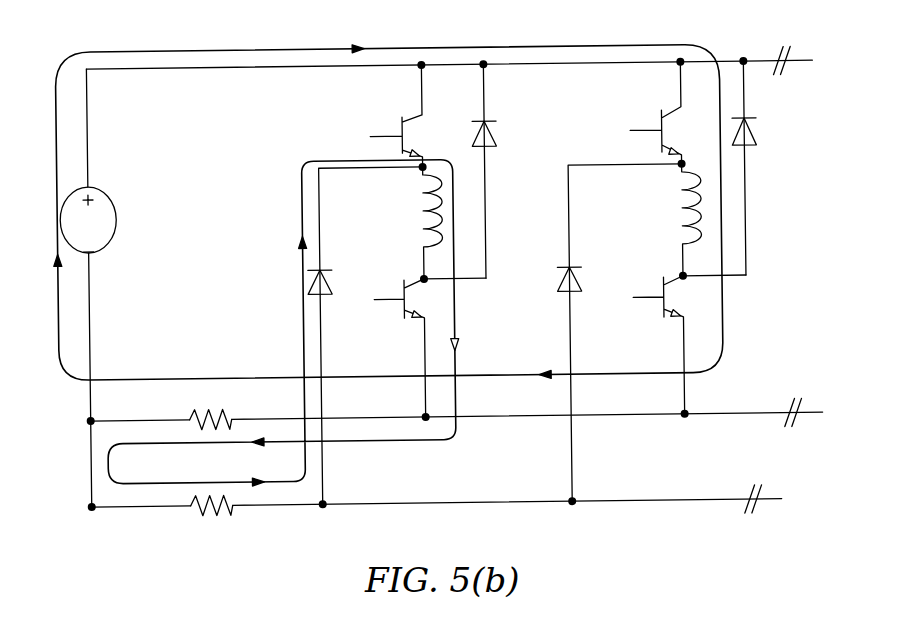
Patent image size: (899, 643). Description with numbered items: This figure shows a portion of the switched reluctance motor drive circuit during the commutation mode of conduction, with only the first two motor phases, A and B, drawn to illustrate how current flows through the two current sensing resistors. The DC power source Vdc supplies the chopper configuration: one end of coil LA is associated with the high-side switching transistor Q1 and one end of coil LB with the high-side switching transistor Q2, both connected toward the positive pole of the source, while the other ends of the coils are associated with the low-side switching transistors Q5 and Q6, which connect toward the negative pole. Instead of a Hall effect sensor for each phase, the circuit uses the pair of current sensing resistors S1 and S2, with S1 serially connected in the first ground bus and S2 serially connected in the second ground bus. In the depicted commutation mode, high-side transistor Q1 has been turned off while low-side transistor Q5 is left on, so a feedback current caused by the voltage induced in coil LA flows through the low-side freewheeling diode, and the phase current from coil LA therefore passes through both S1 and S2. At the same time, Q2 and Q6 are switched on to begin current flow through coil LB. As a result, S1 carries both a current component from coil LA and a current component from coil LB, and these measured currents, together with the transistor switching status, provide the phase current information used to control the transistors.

The high-side switching transistor Q1 is at (391, 116).
The high-side switching transistor Q2 is at (652, 112).
The low-side switching transistor Q5 is at (384, 348).
The low-side switching transistor Q6 is at (642, 345).
The coil LA is at (414, 223).
The coil LB is at (673, 220).
The current sensing resistor S1 is at (210, 408).
The current sensing resistor S2 is at (212, 521).
The DC power source Vdc is at (88, 288).